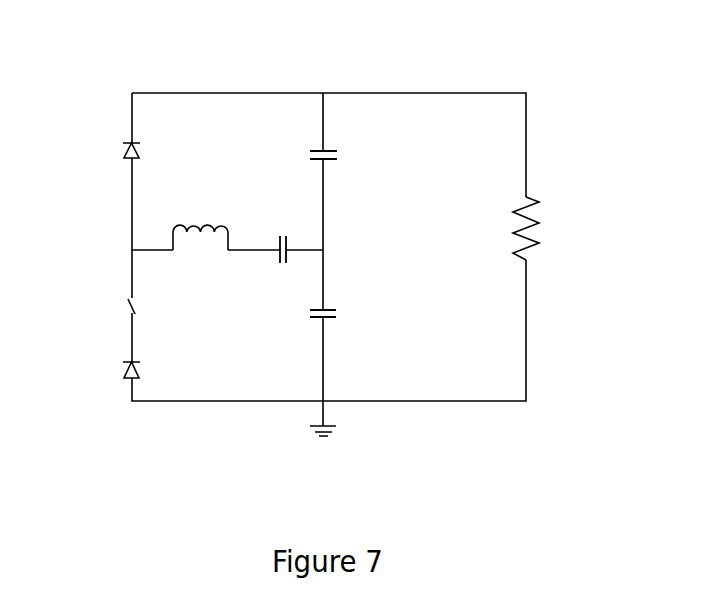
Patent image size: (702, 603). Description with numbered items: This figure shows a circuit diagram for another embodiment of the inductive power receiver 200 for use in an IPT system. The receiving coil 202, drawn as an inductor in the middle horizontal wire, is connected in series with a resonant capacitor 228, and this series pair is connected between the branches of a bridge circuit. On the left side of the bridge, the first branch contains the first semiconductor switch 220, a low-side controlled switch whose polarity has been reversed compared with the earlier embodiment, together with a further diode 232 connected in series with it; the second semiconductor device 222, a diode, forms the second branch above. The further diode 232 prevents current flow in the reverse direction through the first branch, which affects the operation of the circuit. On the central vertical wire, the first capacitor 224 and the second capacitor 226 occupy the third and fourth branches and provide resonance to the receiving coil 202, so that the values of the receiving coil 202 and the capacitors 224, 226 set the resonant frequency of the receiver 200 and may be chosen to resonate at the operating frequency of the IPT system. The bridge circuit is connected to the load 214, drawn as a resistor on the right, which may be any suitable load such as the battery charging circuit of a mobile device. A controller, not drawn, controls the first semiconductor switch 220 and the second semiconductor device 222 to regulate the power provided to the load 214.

The inductive power receiver 200 is at (585, 83).
The receiving coil 202 is at (217, 224).
The load 214 is at (538, 220).
The first semiconductor switch 220 is at (131, 313).
The second semiconductor device 222 is at (130, 145).
The first capacitor 224 is at (327, 318).
The second capacitor 226 is at (313, 151).
The resonant capacitor 228 is at (280, 237).
The further diode 232 is at (128, 376).